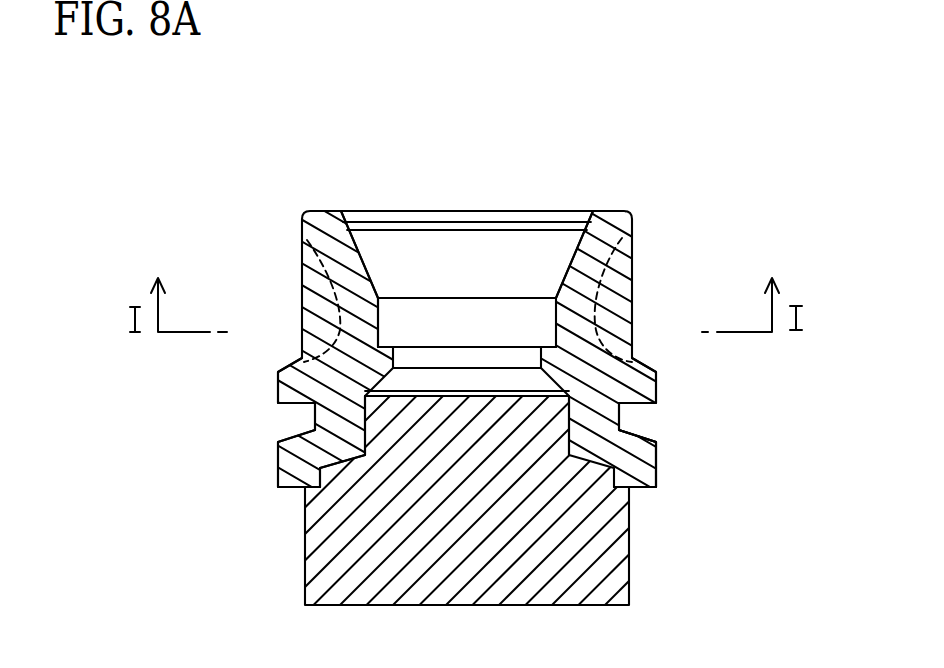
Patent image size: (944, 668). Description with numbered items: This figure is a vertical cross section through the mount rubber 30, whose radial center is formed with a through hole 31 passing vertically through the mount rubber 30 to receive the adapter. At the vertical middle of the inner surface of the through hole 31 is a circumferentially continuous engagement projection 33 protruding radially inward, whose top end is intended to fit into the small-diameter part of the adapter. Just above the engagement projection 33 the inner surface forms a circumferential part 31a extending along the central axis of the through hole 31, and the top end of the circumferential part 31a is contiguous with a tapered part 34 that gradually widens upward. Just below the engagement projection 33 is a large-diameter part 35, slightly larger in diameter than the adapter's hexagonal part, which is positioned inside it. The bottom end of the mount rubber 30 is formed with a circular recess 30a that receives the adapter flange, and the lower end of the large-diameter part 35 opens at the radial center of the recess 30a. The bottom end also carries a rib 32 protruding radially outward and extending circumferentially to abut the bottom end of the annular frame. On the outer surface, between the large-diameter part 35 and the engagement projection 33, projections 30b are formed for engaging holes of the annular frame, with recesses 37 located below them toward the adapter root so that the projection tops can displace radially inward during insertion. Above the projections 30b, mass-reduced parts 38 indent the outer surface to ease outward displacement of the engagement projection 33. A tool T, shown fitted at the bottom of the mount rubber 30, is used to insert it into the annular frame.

The mount rubber 30 is at (308, 92).
The circular recess 30a is at (322, 468).
The projections 30b is at (280, 388).
The through hole 31 is at (527, 350).
The circumferential part 31a is at (380, 318).
The rib 32 is at (645, 465).
The engagement projection 33 is at (542, 380).
The tapered part 34 is at (579, 258).
The large-diameter part 35 is at (368, 402).
The recesses 37 is at (314, 422).
The mass-reduced parts 38 is at (302, 298).
The tool T is at (306, 560).